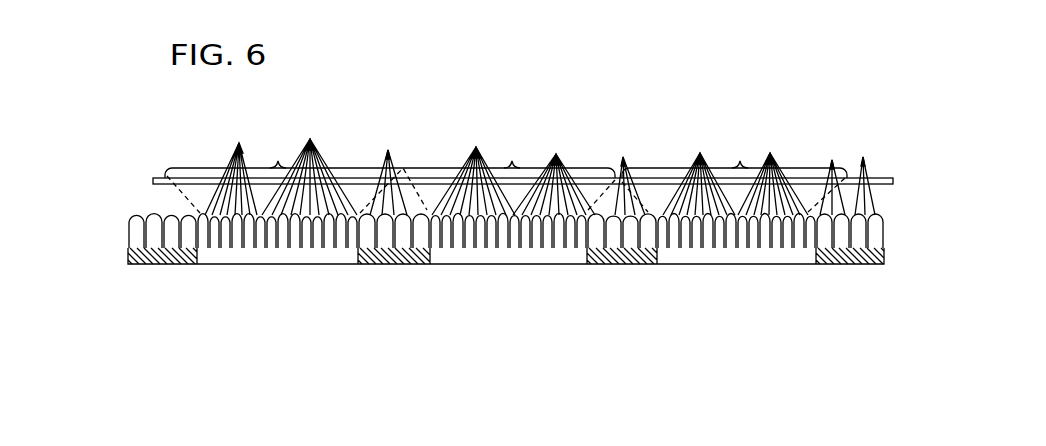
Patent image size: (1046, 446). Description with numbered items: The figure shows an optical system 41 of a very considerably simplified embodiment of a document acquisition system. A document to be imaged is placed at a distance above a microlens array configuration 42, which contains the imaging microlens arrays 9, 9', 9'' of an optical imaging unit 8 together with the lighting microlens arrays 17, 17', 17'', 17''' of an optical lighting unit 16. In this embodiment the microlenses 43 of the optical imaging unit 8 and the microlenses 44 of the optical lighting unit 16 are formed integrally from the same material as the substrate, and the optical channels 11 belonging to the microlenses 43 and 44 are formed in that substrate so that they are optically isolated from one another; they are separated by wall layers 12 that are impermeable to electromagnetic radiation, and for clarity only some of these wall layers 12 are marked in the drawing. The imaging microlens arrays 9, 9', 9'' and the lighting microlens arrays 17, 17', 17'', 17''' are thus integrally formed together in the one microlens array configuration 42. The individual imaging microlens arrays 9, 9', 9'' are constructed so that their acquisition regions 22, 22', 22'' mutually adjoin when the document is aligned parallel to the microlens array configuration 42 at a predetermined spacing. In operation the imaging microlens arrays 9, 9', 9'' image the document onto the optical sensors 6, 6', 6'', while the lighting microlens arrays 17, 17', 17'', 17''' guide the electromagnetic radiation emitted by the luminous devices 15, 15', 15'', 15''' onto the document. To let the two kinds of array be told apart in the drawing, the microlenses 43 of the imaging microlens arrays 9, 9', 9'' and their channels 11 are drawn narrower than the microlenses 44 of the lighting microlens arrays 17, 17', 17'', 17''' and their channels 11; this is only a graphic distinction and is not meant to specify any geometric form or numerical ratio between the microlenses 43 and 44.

The optical system 41 is at (117, 131).
The microlens array configuration 42 is at (118, 230).
The lighting microlens array 17 is at (485, 183).
The lighting microlens array 17' is at (348, 166).
The lighting microlens array 17'' is at (600, 152).
The lighting microlens array 17''' is at (810, 161).
The optical channels 11 is at (195, 250).
The wall layers 12 is at (205, 217).
The microlenses of the optical imaging unit 43 is at (506, 162).
The microlenses of the optical lighting unit 44 is at (148, 215).
The acquisition region 22 is at (275, 146).
The acquisition region 22' is at (512, 143).
The acquisition region 22'' is at (732, 147).
The luminous device 15 is at (160, 285).
The luminous device 15' is at (386, 280).
The luminous device 15'' is at (621, 283).
The luminous device 15''' is at (841, 294).
The optical lighting unit 16 is at (168, 265).
The imaging microlens array 9 is at (255, 305).
The imaging microlens array 9' is at (468, 290).
The imaging microlens array 9'' is at (698, 285).
The optical sensor 6 is at (270, 290).
The optical sensor 6' is at (491, 305).
The optical sensor 6'' is at (663, 290).
The optical imaging unit 8 is at (280, 258).